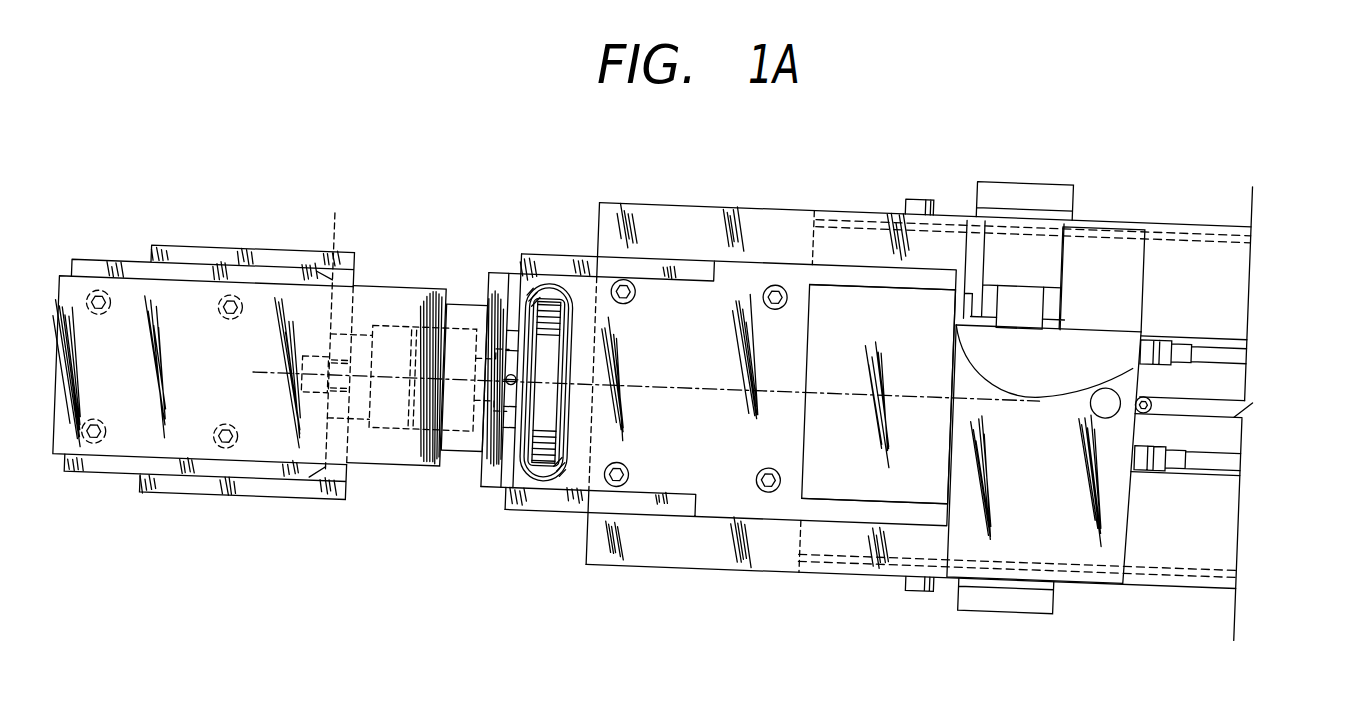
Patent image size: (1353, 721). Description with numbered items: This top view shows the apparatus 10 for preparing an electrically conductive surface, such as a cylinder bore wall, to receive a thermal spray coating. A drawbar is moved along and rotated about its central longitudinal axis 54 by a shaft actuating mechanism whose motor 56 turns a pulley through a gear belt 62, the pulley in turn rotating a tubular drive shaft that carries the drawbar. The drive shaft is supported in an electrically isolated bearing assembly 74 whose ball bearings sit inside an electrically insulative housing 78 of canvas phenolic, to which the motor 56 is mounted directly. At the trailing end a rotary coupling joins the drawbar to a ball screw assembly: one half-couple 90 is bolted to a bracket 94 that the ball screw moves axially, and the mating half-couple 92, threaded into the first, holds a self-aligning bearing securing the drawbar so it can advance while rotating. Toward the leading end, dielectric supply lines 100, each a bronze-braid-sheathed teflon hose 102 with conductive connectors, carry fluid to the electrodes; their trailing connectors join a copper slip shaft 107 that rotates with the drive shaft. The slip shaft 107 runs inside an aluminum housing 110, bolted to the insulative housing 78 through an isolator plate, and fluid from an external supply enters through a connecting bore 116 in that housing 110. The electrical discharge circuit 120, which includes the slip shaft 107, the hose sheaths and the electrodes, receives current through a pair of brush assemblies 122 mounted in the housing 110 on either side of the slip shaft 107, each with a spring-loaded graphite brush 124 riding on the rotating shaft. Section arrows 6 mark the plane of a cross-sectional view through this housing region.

The apparatus 10 is at (1248, 123).
The central longitudinal axis 54 is at (275, 372).
The motor 56 is at (383, 285).
The gear belt 62 is at (553, 307).
The bearing assembly 74 is at (767, 248).
The electrically insulative housing 78 is at (847, 298).
The half-couple 90 is at (380, 427).
The half-couple 92 is at (456, 413).
The bracket 94 is at (333, 215).
The dielectric supply line 100 is at (1227, 340).
The teflon hose 102 is at (1235, 357).
The slip shaft 107 is at (1070, 377).
The housing 110 is at (1083, 557).
The connecting bore 116 is at (1096, 416).
The electrical discharge circuit 120 is at (988, 148).
The brush assembly 122 is at (1035, 183).
The graphite brush 124 is at (1022, 308).
The section line 6- 6 is at (1212, 280).